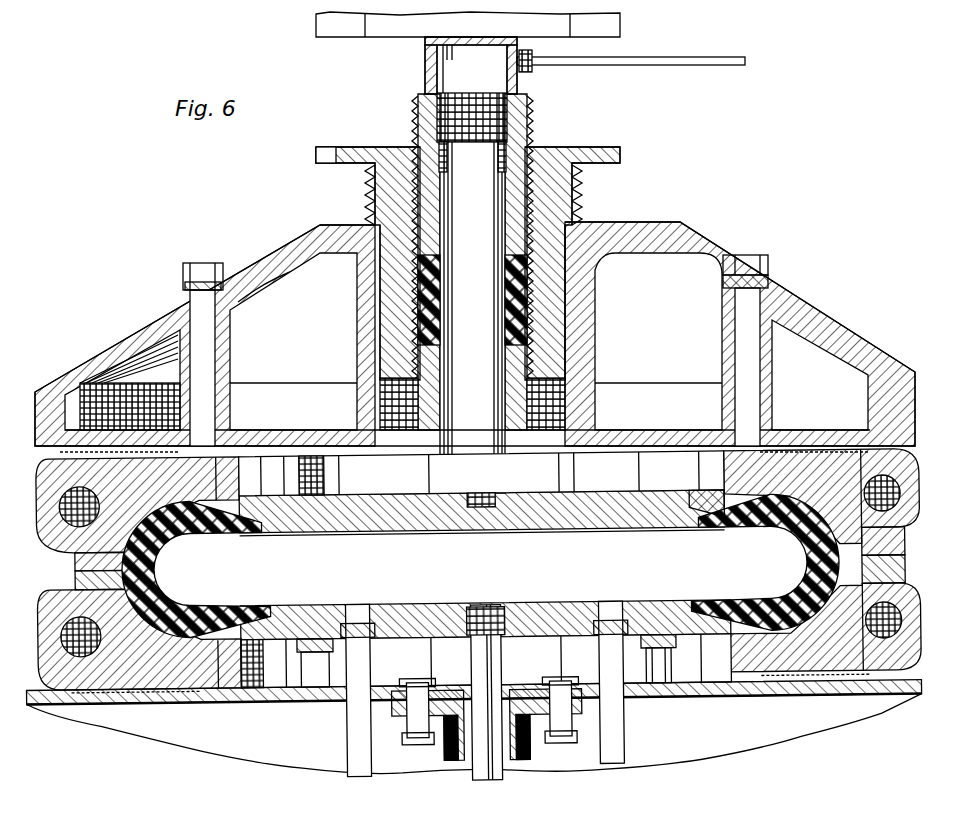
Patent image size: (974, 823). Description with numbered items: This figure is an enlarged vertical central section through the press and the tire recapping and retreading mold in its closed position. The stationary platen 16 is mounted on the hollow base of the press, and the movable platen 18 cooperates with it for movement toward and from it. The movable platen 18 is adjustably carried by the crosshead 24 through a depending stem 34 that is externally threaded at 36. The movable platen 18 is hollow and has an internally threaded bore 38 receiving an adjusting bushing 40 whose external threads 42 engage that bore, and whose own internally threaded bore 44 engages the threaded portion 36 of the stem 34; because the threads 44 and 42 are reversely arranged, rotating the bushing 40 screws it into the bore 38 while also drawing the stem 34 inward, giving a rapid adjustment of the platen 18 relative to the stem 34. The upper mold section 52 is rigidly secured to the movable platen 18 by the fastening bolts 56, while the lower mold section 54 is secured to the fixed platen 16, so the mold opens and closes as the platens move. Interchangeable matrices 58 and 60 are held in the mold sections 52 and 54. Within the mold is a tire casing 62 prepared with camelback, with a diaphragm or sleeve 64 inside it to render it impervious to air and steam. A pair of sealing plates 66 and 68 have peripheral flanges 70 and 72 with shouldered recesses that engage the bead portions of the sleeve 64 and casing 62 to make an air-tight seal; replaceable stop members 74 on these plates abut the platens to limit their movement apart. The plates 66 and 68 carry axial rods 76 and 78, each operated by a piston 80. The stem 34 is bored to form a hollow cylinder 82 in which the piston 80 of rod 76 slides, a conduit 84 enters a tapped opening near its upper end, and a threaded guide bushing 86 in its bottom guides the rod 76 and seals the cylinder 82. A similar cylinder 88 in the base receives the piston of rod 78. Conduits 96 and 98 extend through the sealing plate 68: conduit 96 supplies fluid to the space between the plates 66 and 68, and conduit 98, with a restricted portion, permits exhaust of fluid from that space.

The stationary platen 16 is at (276, 700).
The movable platen 18 is at (803, 340).
The crosshead 24 is at (393, 38).
The depending stem 34 is at (443, 70).
The externally threaded portion 36 is at (520, 134).
The internally threaded bore 38 is at (562, 325).
The adjusting bushing 40 is at (372, 198).
The external threads 42 is at (575, 192).
The internally threaded bore 44 is at (446, 380).
The upper mold section 52 is at (900, 470).
The lower mold section 54 is at (905, 623).
The fastening bolts 56 is at (200, 315).
The matrix 58 is at (906, 515).
The matrix 60 is at (882, 568).
The tire casing 62 is at (815, 538).
The diaphragm or liner or sleeve 64 is at (162, 558).
The sealing plate 66 is at (400, 520).
The sealing plate 68 is at (470, 605).
The peripheral flange 70 is at (716, 498).
The peripheral flange 72 is at (266, 650).
The stop members 74 is at (323, 492).
The rod 76 is at (497, 482).
The rod 78 is at (499, 665).
The piston 80 is at (487, 100).
The hollow cylinder 82 is at (507, 165).
The conduit 84 is at (545, 62).
The guide bushing 86 is at (430, 299).
The cylinder 88 is at (440, 742).
The conduit 96 is at (354, 740).
The conduit 98 is at (620, 736).